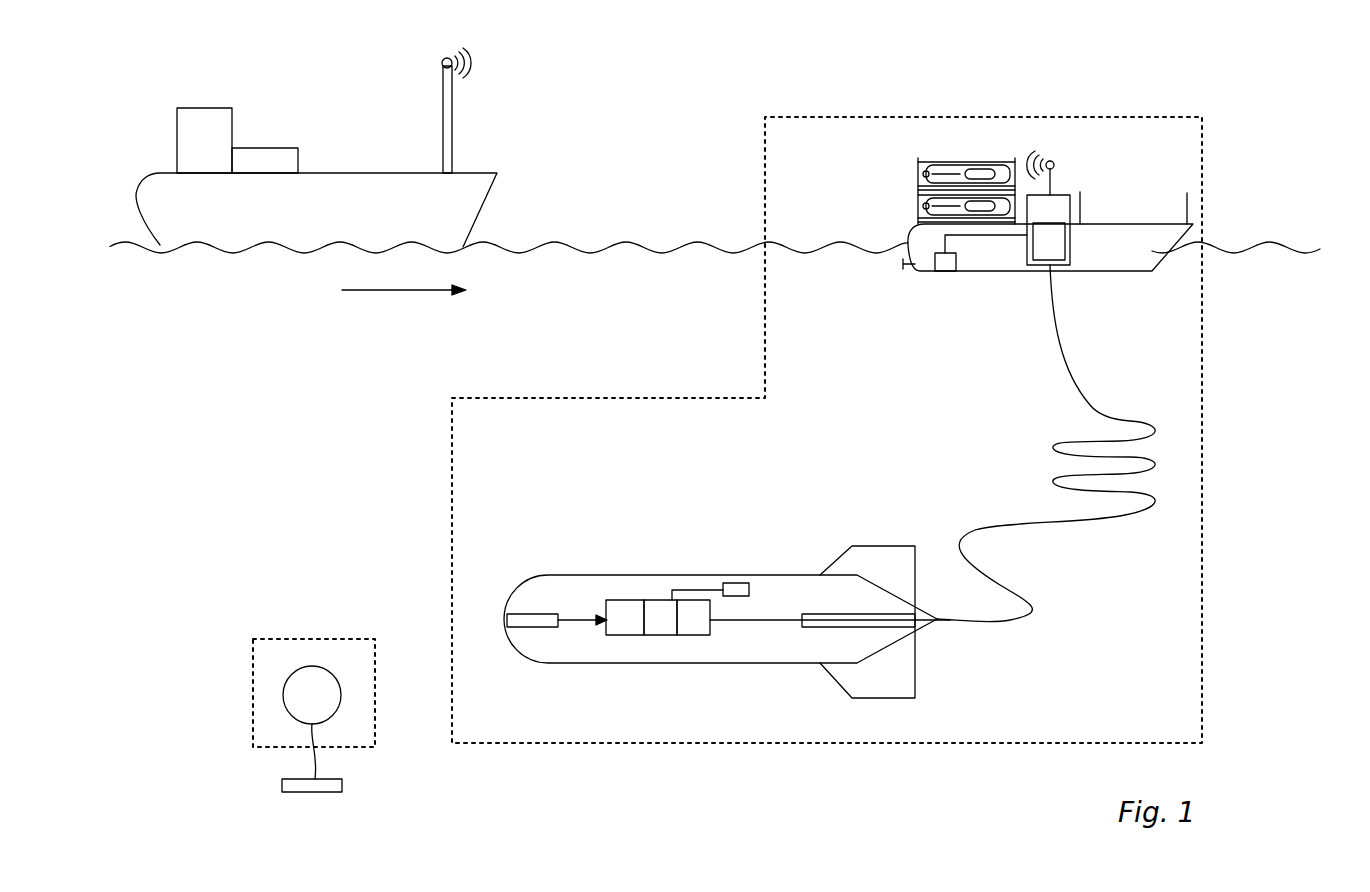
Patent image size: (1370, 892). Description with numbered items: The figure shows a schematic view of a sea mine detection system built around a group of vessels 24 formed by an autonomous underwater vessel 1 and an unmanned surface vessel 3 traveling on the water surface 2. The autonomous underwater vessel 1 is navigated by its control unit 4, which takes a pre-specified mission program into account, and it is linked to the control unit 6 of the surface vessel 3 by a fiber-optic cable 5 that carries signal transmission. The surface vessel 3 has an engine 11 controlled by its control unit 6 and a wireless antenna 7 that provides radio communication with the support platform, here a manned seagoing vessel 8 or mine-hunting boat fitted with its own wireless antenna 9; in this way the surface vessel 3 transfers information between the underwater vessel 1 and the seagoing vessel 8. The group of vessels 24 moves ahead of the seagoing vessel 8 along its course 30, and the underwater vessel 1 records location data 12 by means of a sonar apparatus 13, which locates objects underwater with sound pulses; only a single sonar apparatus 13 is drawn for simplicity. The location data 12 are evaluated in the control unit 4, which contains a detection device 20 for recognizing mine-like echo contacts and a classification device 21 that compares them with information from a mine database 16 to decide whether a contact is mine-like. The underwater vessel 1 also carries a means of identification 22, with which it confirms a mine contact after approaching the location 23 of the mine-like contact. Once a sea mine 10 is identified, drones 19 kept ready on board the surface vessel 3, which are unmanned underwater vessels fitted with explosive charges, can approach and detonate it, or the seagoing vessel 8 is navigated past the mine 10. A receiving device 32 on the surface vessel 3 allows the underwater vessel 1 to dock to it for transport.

The autonomous underwater vessel 1 is at (760, 595).
The water surface 2 is at (642, 243).
The unmanned surface vessel 3 is at (1127, 257).
The control unit 4 is at (687, 644).
The fiber-optic cable 5 is at (1073, 517).
The control unit of the surface vessel 6 is at (1048, 250).
The wireless antenna 7 is at (1055, 165).
The seagoing vessel 8 is at (297, 220).
The wireless antenna 9 is at (455, 70).
The sea mine 10 is at (303, 697).
The engine 11 is at (945, 270).
The location data 12 is at (576, 620).
The sonar apparatus 13 is at (512, 620).
The mine database 16 is at (737, 583).
The drones 19 is at (958, 170).
The detection device 20 is at (618, 623).
The classification device 21 is at (662, 623).
The means of identification 22 is at (697, 620).
The location of the mine-like contact 23 is at (265, 639).
The group of vessels 24 is at (1205, 628).
The course 30 is at (387, 292).
The receiving device 32 is at (1153, 198).